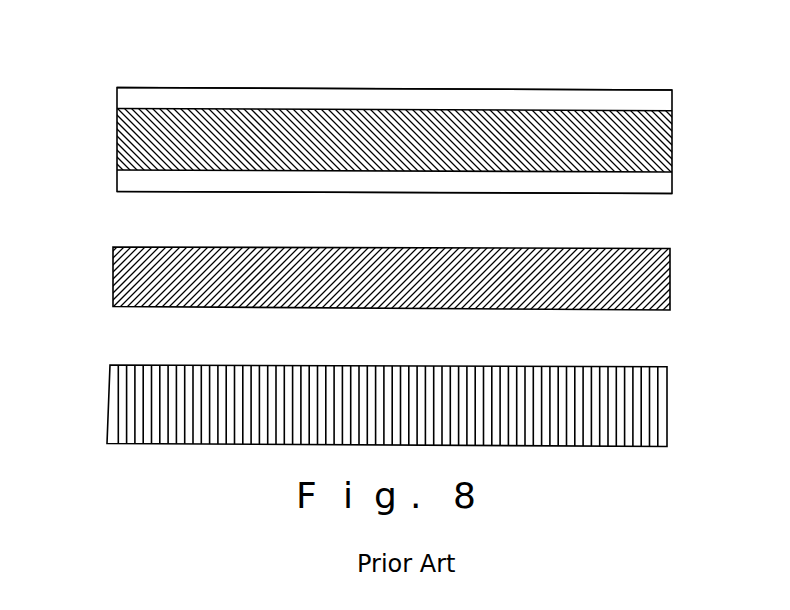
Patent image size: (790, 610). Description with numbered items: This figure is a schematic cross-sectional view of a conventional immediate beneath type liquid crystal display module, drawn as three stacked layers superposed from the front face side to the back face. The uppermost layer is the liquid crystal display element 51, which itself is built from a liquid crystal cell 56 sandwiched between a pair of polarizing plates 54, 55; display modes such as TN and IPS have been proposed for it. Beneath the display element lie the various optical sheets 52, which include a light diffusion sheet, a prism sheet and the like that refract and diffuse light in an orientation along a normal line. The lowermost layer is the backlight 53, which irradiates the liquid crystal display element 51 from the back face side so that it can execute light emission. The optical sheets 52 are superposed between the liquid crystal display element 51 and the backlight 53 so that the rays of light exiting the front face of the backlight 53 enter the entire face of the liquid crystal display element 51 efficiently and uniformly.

The liquid crystal display element 51 is at (399, 118).
The optical sheets 52 is at (100, 255).
The backlight 53 is at (100, 372).
The polarizing plate 54 is at (672, 100).
The polarizing plate 55 is at (672, 183).
The liquid crystal cell 56 is at (672, 138).